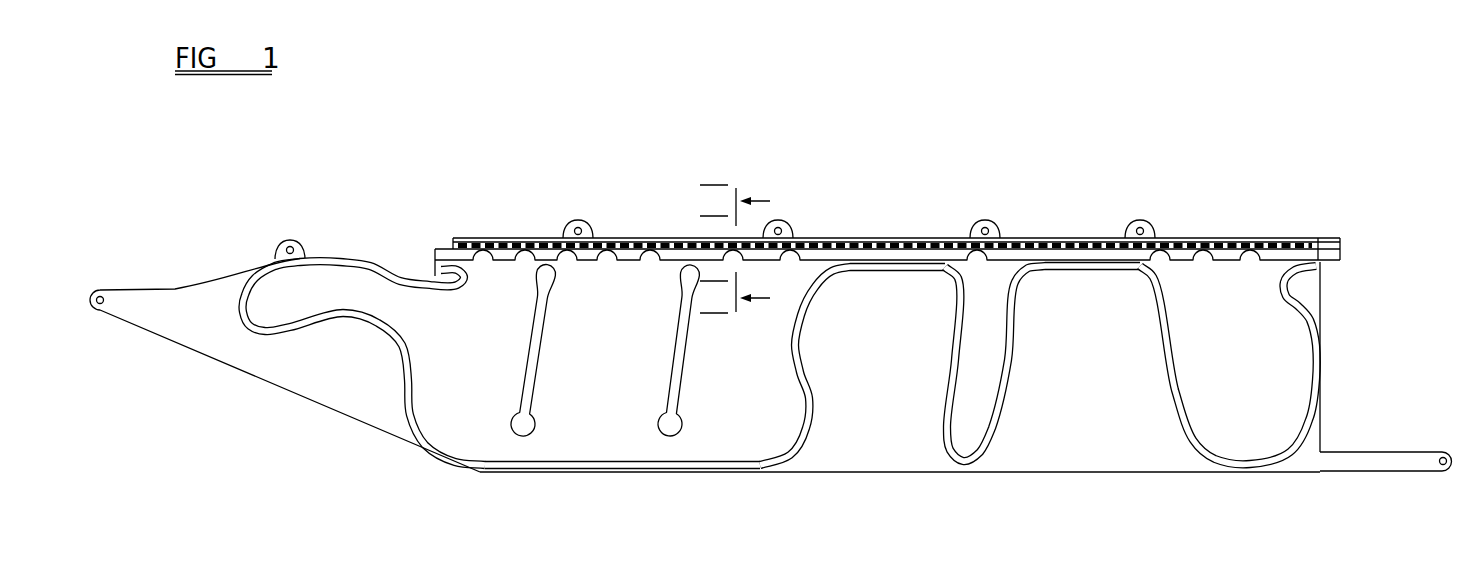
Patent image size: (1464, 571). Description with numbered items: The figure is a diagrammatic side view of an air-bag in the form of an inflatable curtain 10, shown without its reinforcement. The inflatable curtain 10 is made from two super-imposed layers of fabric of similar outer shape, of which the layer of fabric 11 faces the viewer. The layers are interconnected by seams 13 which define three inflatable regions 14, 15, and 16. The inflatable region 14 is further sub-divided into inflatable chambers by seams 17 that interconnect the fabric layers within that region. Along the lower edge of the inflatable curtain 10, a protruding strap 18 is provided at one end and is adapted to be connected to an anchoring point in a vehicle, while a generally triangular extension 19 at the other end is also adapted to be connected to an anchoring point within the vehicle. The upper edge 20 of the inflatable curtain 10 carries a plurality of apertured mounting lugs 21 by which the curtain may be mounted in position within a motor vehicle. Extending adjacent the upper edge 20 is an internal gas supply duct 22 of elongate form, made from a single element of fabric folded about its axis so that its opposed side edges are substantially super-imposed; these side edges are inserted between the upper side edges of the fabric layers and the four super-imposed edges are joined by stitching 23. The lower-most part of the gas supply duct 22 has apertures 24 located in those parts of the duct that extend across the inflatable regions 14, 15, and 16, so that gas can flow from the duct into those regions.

The inflatable curtain 10 is at (981, 195).
The layer of fabric 11 is at (757, 421).
The seams 13 is at (553, 476).
The inflatable region 14 is at (725, 417).
The inflatable region 15 is at (968, 437).
The inflatable region 16 is at (1232, 430).
The seams 17 is at (510, 390).
The protruding strap 18 is at (1388, 462).
The generally triangular extension 19 is at (307, 358).
The upper edge 20 is at (1074, 237).
The apertured mounting lugs 21 is at (290, 238).
The internal gas supply duct 22 is at (1296, 238).
The stitching 23 is at (874, 245).
The apertures 24 is at (598, 272).